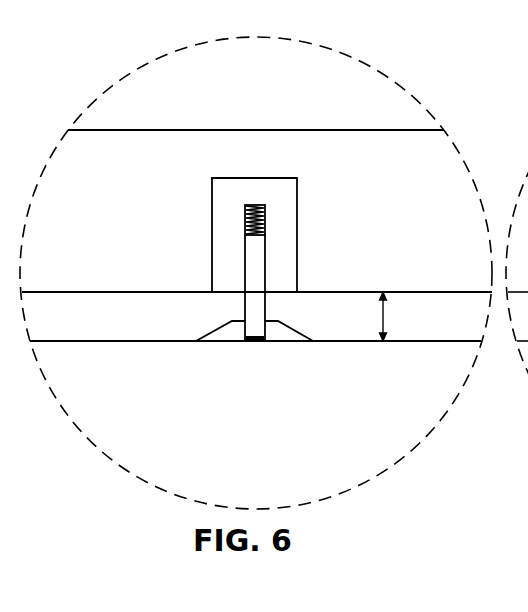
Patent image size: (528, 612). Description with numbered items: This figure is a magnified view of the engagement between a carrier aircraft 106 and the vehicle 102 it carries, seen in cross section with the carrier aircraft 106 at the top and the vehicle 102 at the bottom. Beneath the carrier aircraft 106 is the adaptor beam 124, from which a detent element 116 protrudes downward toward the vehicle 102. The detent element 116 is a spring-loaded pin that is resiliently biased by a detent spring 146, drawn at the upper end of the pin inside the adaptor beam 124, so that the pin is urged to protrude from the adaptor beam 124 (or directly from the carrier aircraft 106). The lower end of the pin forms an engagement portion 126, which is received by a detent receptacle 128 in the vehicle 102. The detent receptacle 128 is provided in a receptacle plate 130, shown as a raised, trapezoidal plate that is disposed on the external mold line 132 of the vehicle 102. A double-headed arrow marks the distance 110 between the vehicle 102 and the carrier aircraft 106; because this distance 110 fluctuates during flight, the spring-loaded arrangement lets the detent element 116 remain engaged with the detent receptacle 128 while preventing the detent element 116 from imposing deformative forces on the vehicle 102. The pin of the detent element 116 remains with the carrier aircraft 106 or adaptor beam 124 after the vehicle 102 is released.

The vehicle 102 is at (272, 440).
The carrier aircraft 106 is at (269, 104).
The distance 110 is at (391, 318).
The detent element 116 is at (256, 266).
The adaptor beam 124 is at (160, 209).
The engagement portion 126 is at (259, 342).
The detent receptacle 128 is at (241, 330).
The receptacle plate 130 is at (228, 325).
The external mold line 132 is at (107, 340).
The detent spring 146 is at (265, 219).